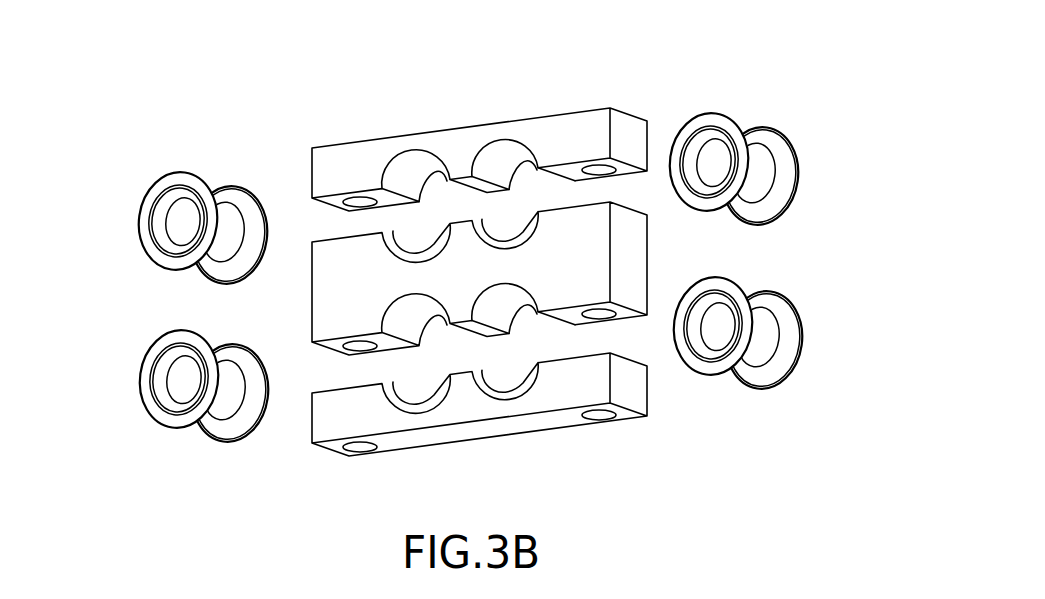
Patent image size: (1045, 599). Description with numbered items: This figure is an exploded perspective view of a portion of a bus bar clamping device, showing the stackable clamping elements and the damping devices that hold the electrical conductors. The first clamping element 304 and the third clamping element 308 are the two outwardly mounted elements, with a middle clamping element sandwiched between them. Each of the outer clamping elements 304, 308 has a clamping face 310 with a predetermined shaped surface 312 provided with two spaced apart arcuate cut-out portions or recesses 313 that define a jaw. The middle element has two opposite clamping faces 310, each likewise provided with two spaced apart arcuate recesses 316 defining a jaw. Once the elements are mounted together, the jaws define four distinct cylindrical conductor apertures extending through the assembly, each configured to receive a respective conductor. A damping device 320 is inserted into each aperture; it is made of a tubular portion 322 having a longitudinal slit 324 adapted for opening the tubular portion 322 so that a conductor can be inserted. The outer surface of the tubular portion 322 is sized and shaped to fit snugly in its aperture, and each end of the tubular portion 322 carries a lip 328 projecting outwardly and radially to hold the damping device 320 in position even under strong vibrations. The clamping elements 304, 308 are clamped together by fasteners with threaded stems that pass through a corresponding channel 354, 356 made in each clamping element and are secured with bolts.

The first clamping element 304 is at (478, 435).
The third clamping element 308 is at (479, 117).
The clamping face 310 is at (473, 187).
The predetermined shaped surface 312 is at (580, 170).
The recess 313 is at (503, 159).
The recess 316 is at (505, 310).
The damping device 320 is at (777, 138).
The tubular portion 322 is at (754, 172).
The longitudinal slit 324 is at (172, 183).
The lip 328 is at (760, 176).
The channel 354 is at (352, 462).
The channel 356 is at (598, 432).